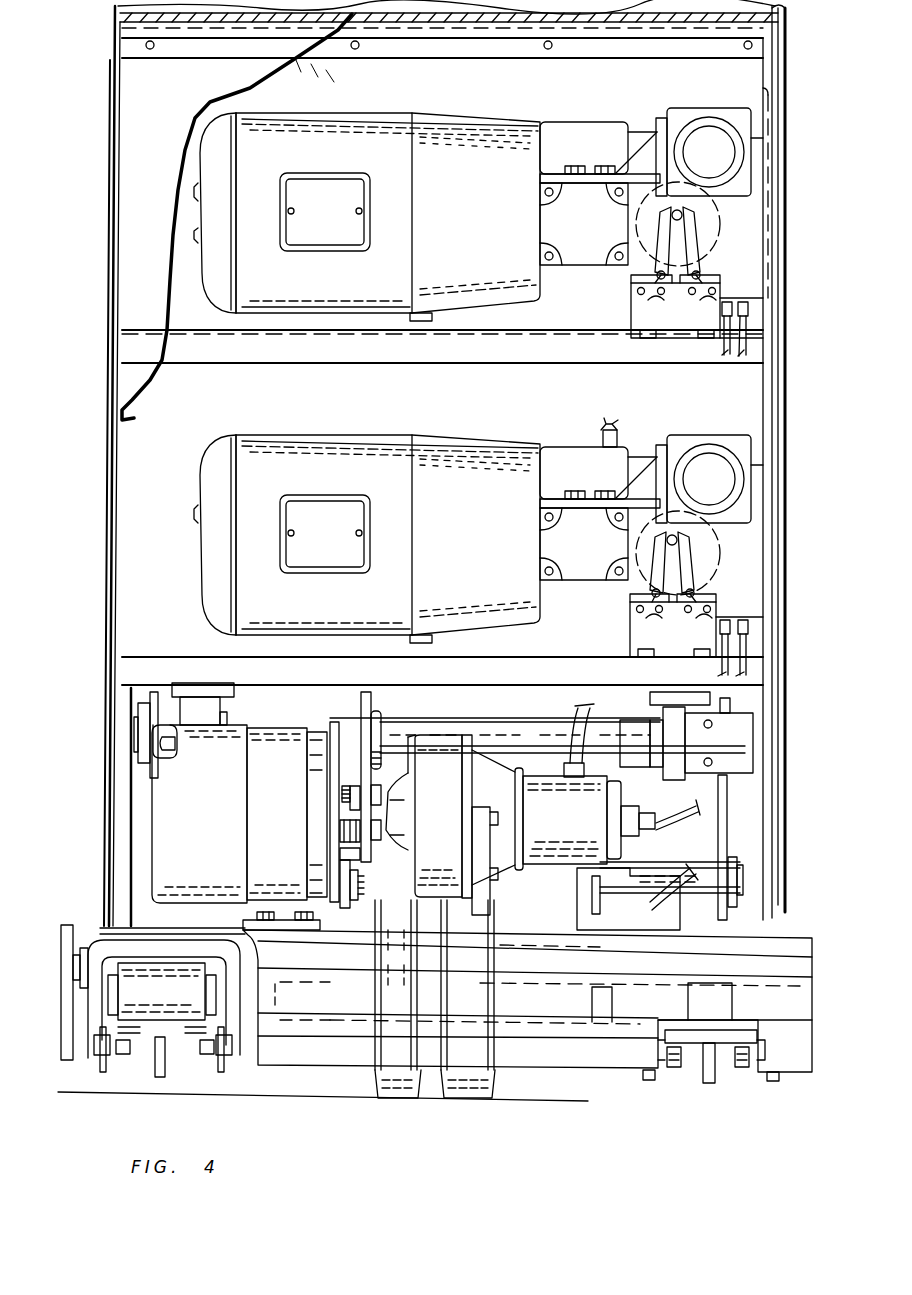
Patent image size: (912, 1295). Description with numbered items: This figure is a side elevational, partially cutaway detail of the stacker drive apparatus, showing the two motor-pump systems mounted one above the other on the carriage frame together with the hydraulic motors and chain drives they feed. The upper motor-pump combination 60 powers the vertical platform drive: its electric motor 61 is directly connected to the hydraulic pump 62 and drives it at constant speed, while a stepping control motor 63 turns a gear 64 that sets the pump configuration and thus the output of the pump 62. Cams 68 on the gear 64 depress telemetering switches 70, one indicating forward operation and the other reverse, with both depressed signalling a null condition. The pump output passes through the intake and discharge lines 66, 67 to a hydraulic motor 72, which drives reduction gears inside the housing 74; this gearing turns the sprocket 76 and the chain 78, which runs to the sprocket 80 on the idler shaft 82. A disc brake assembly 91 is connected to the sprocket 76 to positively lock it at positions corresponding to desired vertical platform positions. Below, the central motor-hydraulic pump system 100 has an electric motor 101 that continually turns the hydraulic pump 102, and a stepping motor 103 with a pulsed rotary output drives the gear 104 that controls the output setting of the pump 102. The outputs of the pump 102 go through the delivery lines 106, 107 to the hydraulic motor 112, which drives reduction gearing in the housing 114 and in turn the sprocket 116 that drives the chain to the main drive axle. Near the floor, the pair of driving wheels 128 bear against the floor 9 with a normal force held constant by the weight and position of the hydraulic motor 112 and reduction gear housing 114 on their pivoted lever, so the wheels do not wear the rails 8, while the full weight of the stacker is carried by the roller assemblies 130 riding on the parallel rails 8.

The upper motor-pump combination 60 is at (360, 100).
The electric motor 61 is at (388, 128).
The hydraulic pump 62 is at (598, 132).
The stepping control motor 63 is at (734, 120).
The gear 64 is at (708, 228).
The cams 68 is at (692, 242).
The telemetering switches 70 is at (631, 290).
The discharge line 67 is at (748, 328).
The intake line 66 is at (722, 345).
The central motor-hydraulic pump system 100 is at (300, 410).
The electric motor 101 is at (358, 450).
The hydraulic pump 102 is at (566, 448).
The stepping motor 103 is at (716, 452).
The gear 104 is at (696, 548).
The delivery line 106 is at (722, 664).
The delivery line 107 is at (752, 656).
The idler shaft 82 is at (288, 726).
The sprocket 80 is at (372, 705).
The chain 78 is at (360, 738).
The housing 74 is at (455, 740).
The sprocket 76 is at (392, 822).
The hydraulic motor 72 is at (540, 776).
The hydraulic motor 112 is at (601, 899).
The sprocket 116 is at (345, 862).
The housing 114 is at (365, 915).
The disc brake assembly 91 is at (162, 846).
The driving wheels 128 is at (490, 1086).
The roller assemblies 130 is at (42, 962).
The rails 8 is at (172, 1072).
The floor 9 is at (345, 1100).